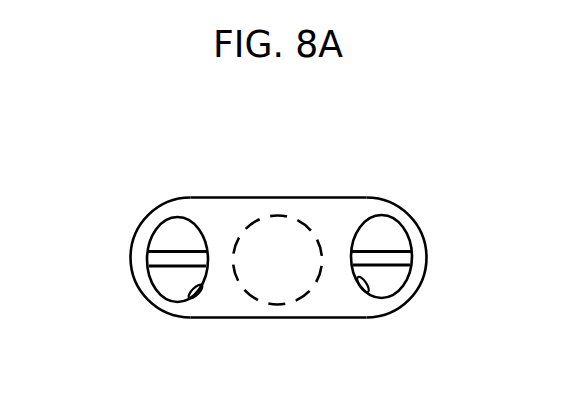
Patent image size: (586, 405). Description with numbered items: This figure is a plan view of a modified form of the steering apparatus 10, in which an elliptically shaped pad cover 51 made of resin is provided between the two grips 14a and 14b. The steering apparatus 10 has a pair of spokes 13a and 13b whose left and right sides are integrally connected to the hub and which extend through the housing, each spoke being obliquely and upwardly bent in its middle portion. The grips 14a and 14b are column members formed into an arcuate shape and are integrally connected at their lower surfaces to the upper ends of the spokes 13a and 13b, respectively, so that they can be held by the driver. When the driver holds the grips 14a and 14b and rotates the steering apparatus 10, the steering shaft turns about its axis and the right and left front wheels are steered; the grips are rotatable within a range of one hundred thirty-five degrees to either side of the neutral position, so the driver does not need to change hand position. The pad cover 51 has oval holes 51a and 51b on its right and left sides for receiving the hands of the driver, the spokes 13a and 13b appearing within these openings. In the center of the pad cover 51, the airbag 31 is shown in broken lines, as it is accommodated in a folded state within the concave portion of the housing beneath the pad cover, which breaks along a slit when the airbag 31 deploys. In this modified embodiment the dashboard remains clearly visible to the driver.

The steering apparatus 10 is at (279, 261).
The holder body 51 is at (238, 318).
The grip 14a is at (130, 241).
The grip 14b is at (427, 250).
The spoke 13a is at (160, 267).
The spoke 13b is at (388, 265).
The oval hole 51a is at (188, 298).
The oval hole 51b is at (367, 292).
The airbag 31 is at (278, 305).